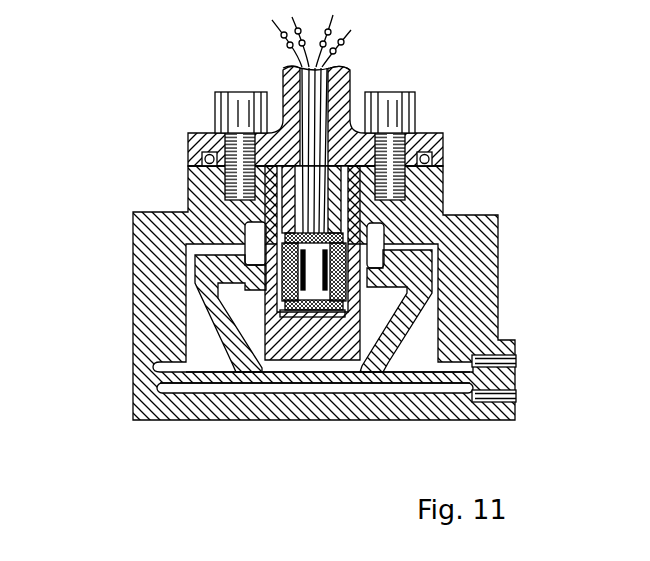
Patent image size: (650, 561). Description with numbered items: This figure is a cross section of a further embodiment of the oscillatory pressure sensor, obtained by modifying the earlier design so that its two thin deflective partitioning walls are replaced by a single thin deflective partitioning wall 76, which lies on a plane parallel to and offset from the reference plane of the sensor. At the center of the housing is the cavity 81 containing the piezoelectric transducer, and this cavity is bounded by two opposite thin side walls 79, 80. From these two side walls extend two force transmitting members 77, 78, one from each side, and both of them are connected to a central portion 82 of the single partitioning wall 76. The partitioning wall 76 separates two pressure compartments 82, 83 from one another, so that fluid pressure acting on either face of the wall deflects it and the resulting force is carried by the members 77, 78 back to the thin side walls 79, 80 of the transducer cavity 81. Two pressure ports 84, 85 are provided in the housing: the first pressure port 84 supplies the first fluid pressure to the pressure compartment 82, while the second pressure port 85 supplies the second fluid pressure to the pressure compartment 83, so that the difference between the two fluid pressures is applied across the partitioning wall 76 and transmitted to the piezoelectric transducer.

The single thin deflective partitioning wall 76 is at (302, 378).
The force transmitting member 77 is at (220, 322).
The force transmitting member 78 is at (418, 338).
The thin side wall 79 is at (247, 243).
The thin side wall 80 is at (370, 243).
The cavity 81 is at (385, 220).
The pressure compartment 82 is at (206, 342).
The pressure compartment 83 is at (351, 389).
The pressure port 84 is at (517, 361).
The pressure port 85 is at (517, 401).